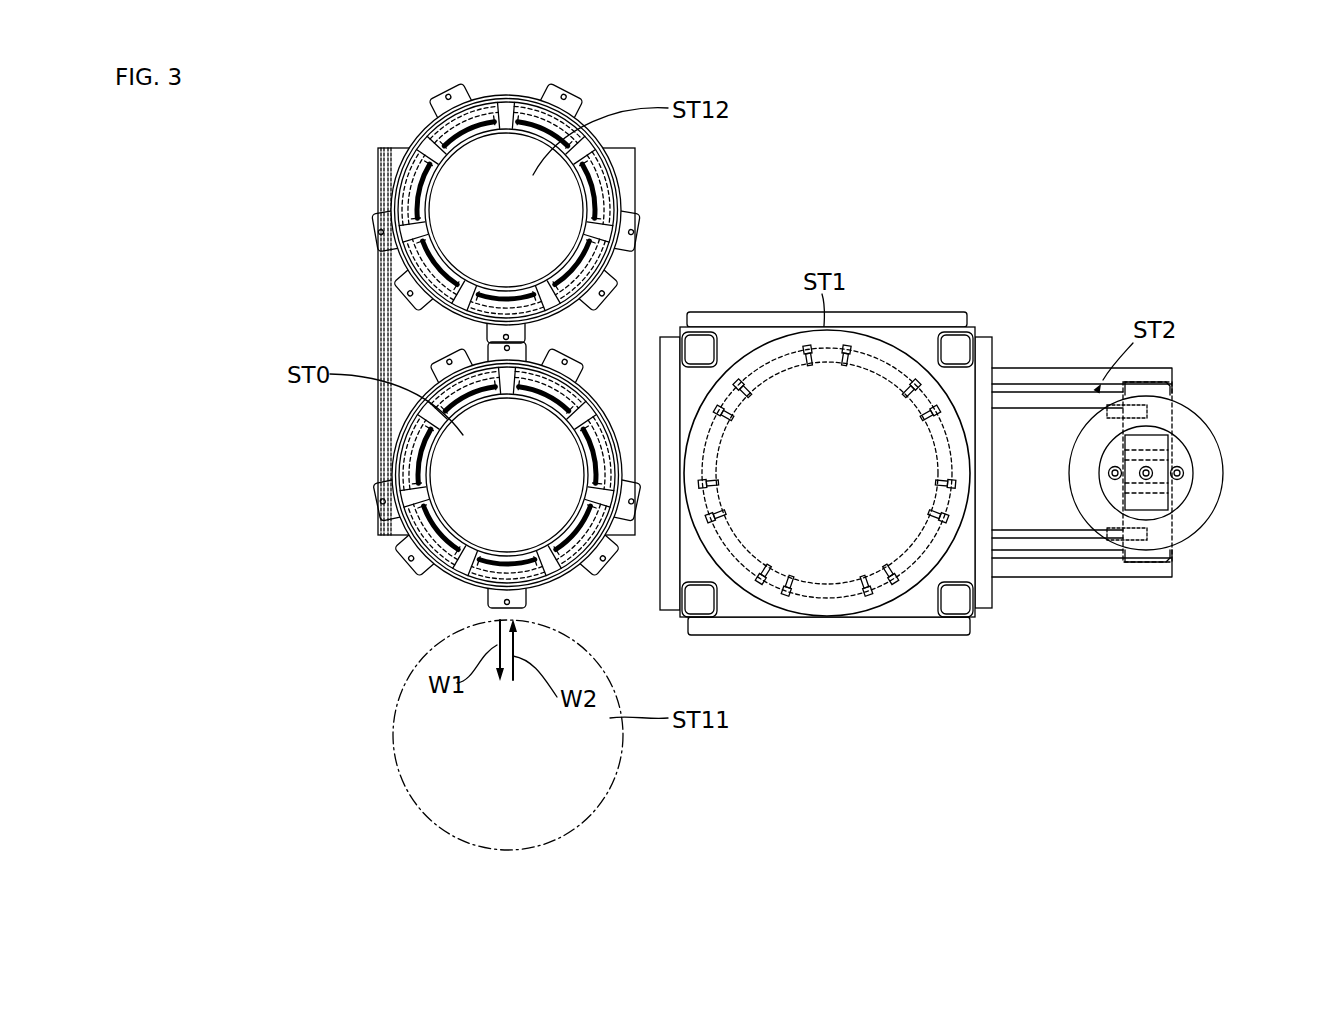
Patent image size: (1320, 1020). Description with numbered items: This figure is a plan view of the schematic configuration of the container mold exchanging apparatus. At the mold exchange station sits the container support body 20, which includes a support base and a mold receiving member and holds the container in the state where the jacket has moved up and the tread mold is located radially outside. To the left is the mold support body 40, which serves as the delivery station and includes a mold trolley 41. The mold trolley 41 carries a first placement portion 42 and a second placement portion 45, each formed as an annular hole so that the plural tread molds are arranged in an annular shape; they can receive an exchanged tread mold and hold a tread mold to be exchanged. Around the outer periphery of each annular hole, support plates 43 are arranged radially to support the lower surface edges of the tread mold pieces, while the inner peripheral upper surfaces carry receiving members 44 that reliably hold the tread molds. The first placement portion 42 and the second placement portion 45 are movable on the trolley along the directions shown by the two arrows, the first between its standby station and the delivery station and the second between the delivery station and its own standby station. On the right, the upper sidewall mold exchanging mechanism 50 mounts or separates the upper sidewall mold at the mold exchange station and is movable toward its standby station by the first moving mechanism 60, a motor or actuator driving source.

The container support body 20 is at (878, 652).
The mold support body 40 is at (318, 217).
The mold trolley 41 is at (625, 260).
The first placement portion 42 is at (438, 582).
The support plates 43 is at (442, 92).
The receiving members 44 is at (418, 136).
The second placement portion 45 is at (398, 139).
The upper sidewall mold exchanging mechanism 50 is at (1206, 407).
The first moving mechanism 60 is at (1193, 466).